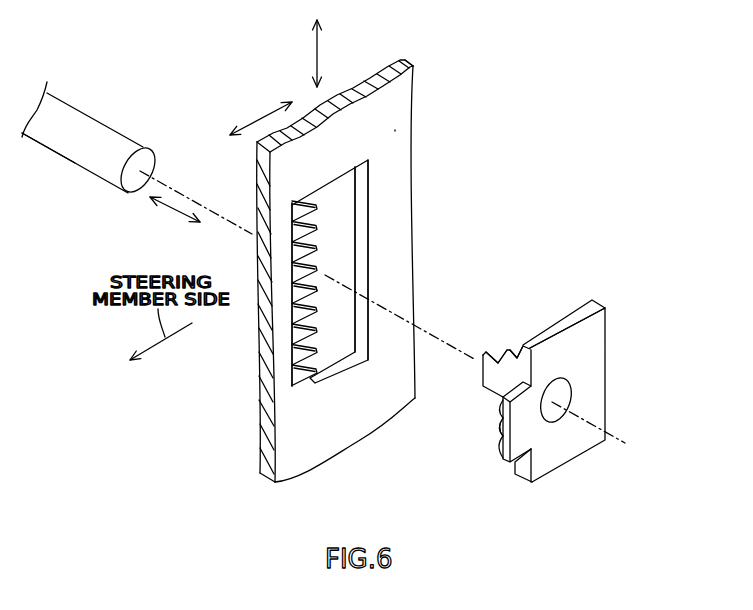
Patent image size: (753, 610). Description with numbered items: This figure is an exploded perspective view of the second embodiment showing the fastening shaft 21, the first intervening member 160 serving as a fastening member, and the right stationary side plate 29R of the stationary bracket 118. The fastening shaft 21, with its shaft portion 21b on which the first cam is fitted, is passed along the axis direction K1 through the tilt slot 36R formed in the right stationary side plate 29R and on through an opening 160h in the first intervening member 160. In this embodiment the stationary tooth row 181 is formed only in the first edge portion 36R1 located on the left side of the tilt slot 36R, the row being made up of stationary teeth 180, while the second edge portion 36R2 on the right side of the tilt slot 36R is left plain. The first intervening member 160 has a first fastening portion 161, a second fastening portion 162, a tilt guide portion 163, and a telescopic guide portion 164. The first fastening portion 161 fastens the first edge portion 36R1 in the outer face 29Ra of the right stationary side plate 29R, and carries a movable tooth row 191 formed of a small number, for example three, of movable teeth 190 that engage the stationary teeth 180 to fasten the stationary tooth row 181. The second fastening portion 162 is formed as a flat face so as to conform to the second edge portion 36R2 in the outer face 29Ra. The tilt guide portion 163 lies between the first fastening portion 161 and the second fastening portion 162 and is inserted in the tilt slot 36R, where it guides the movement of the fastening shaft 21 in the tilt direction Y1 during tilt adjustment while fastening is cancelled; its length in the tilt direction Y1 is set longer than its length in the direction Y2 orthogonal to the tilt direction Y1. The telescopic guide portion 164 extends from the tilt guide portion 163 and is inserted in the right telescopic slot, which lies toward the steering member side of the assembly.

The fastening shaft 21 is at (103, 128).
The shaft portion 21b is at (65, 143).
The stationary bracket 118 is at (425, 82).
The right stationary side plate 29R is at (390, 118).
The outer face of right stationary side plate 29Ra is at (393, 149).
The tilt slot 36R is at (340, 242).
The first edge portion 36R1 is at (275, 278).
The second edge portion 36R2 is at (373, 222).
The tooth 180 is at (298, 232).
The stationary tooth row 181 is at (312, 290).
The first intervening member 160 is at (552, 367).
The hole of lock member 160h is at (560, 388).
The first fastening portion 161 is at (510, 392).
The second fastening portion 162 is at (583, 302).
The tilt guide portion 163 is at (510, 347).
The telescopic guide portion 164 is at (500, 358).
The movable teeth 190 is at (500, 443).
The movable tooth row 191 is at (497, 414).
The axis direction K1 is at (173, 208).
The tilt direction Y1 is at (315, 53).
The direction orthogonal to tilt direction Y2 is at (261, 120).